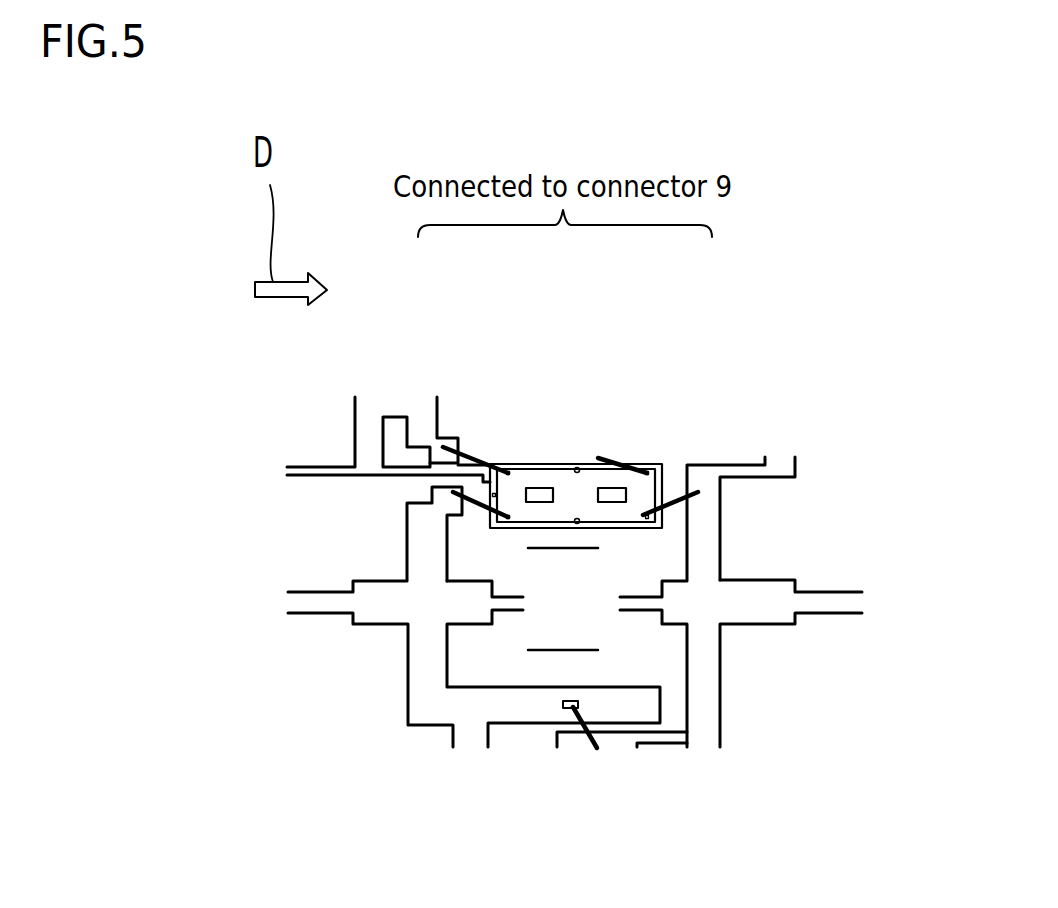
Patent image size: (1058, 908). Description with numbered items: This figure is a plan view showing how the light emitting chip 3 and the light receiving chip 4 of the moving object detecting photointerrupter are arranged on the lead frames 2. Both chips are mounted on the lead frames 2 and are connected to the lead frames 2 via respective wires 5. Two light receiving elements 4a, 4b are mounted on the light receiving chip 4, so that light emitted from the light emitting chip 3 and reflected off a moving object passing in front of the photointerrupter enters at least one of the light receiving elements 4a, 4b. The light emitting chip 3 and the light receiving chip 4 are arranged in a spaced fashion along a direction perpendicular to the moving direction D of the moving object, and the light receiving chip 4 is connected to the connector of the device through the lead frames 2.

The lead frames 2 is at (515, 530).
The light emitting chip 3 is at (573, 710).
The light receiving chip 4 is at (568, 464).
The light receiving element 4a is at (533, 488).
The light receiving element 4b is at (608, 485).
The wires 5 is at (465, 455).